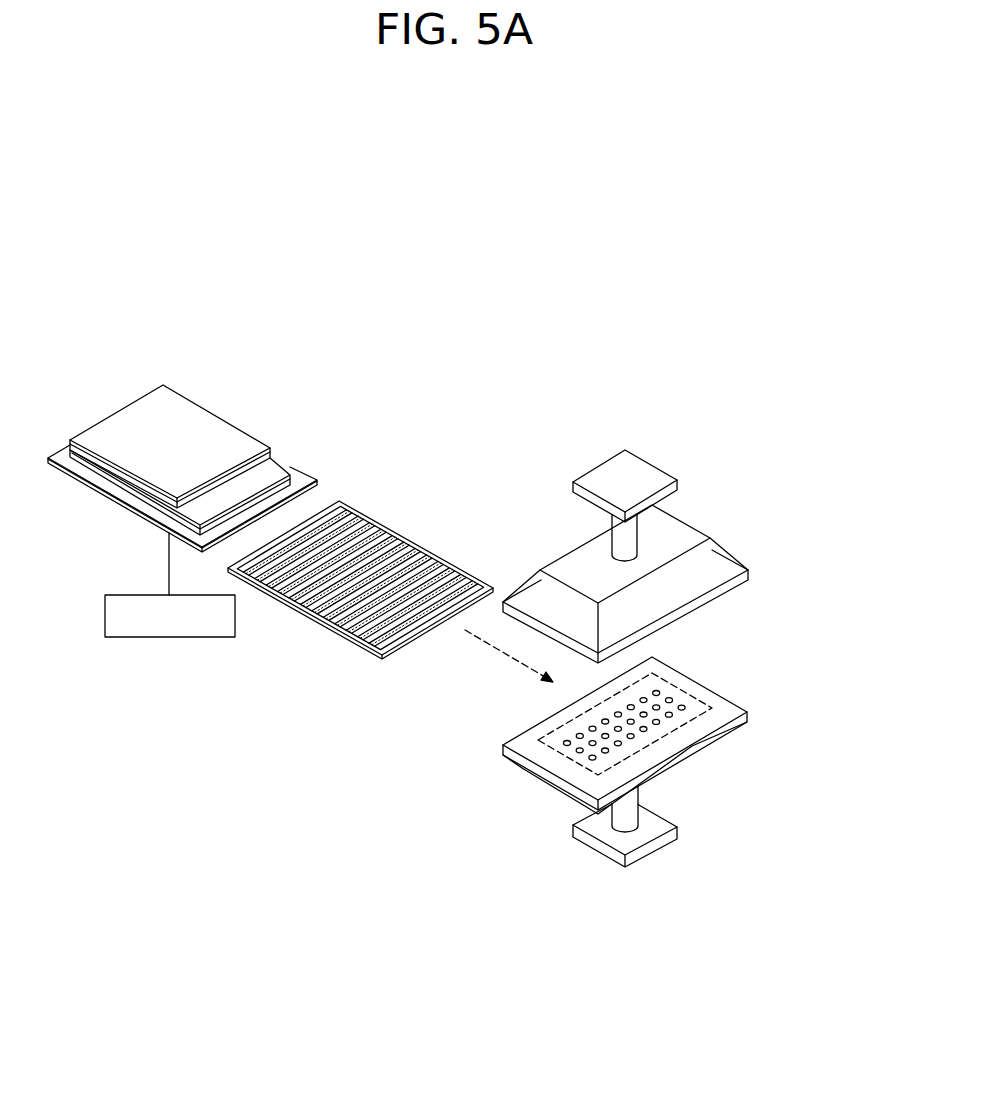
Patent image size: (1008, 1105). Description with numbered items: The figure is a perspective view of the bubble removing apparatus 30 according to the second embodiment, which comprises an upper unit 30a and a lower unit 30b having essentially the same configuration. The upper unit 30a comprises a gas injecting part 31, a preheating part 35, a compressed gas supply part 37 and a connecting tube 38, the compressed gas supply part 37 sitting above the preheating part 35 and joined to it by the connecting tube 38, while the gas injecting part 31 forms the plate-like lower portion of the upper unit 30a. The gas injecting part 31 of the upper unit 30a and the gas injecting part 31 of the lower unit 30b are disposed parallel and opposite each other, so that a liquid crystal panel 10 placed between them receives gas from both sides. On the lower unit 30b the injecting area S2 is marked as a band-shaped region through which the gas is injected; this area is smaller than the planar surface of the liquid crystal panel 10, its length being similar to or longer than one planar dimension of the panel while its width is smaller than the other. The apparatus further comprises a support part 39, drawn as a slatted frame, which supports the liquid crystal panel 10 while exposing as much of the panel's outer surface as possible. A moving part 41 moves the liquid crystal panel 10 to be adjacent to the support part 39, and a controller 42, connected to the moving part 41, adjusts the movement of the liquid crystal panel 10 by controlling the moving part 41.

The liquid crystal panel 10 is at (135, 378).
The moving part 41 is at (115, 502).
The controller 42 is at (172, 637).
The support part 39 is at (387, 533).
The compressed gas supply part 37 is at (647, 465).
The connecting tube 38 is at (617, 537).
The preheating part 35 is at (687, 532).
The gas injecting part 31 is at (747, 570).
The upper unit 30a is at (666, 538).
The lower unit 30b is at (666, 762).
The bubble removing apparatus 30 is at (830, 617).
The injecting area S2 is at (677, 733).